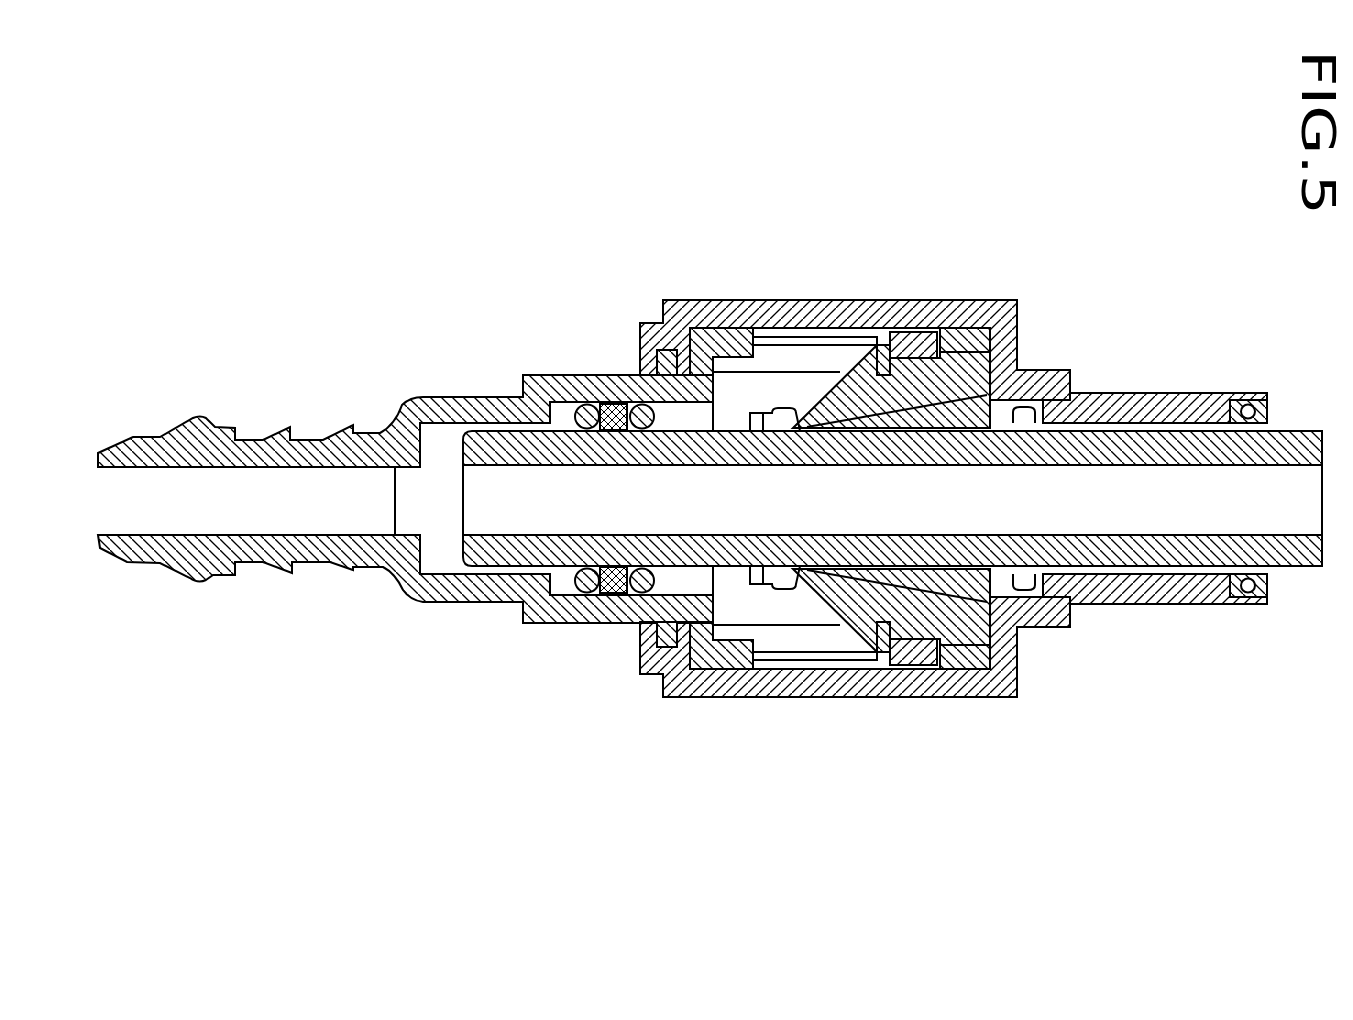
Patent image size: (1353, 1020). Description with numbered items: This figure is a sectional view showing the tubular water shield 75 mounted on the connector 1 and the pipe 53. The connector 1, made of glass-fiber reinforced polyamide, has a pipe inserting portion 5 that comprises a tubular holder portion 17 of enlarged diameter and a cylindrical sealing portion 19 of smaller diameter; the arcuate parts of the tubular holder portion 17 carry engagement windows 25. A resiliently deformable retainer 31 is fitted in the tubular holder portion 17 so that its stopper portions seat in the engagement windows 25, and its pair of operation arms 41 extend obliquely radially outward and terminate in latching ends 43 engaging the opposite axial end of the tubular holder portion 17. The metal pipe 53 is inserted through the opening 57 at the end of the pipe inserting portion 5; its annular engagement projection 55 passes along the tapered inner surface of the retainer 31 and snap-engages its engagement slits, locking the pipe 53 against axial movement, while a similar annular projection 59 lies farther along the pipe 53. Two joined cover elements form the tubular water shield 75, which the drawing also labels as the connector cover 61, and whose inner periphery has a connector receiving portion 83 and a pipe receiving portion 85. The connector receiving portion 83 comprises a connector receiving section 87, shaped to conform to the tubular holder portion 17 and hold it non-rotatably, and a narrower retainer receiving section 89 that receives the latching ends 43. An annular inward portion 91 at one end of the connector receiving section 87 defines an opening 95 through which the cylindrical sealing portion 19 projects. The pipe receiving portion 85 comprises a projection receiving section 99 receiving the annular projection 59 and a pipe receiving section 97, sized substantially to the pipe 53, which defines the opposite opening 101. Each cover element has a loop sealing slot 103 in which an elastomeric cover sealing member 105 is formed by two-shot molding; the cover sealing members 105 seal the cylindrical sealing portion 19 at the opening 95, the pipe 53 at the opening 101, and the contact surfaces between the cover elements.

The connector 1 is at (400, 402).
The pipe inserting portion 5 is at (774, 668).
The tubular holder portion 17 is at (927, 300).
The cylindrical sealing portion 19 is at (585, 612).
The engagement window 25 is at (762, 357).
The retainer 31 is at (807, 605).
The operation arm 41 is at (893, 420).
The latching end 43 is at (962, 400).
The pipe 53 is at (640, 628).
The annular engagement projection 55 is at (772, 425).
The opening 57 is at (950, 660).
The annular projection 59 is at (1080, 607).
The housing 61 is at (940, 300).
The tubular water shield 75 is at (968, 295).
The connector receiving portion 83 is at (884, 345).
The pipe receiving portion 85 is at (1160, 553).
The connector receiving section 87 is at (822, 337).
The retainer receiving section 89 is at (1010, 340).
The annular inward portion 91 is at (718, 300).
The opening 95 is at (640, 363).
The pipe receiving section 97 is at (1177, 435).
The projection receiving section 99 is at (1037, 592).
The opening 101 is at (1322, 500).
The loop sealing slot 103 is at (645, 365).
The cover sealing member 105 is at (694, 662).